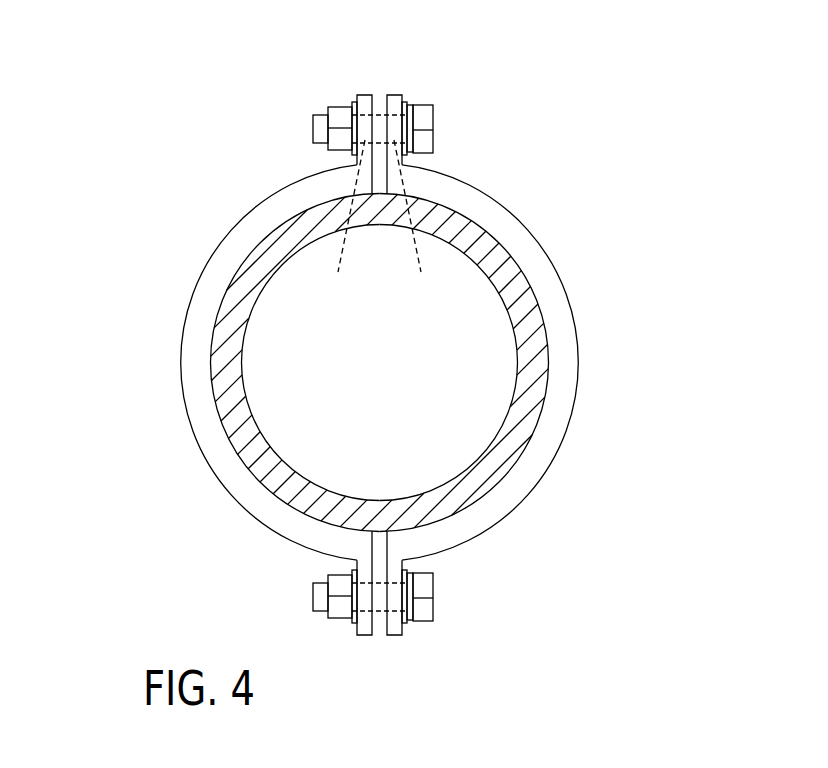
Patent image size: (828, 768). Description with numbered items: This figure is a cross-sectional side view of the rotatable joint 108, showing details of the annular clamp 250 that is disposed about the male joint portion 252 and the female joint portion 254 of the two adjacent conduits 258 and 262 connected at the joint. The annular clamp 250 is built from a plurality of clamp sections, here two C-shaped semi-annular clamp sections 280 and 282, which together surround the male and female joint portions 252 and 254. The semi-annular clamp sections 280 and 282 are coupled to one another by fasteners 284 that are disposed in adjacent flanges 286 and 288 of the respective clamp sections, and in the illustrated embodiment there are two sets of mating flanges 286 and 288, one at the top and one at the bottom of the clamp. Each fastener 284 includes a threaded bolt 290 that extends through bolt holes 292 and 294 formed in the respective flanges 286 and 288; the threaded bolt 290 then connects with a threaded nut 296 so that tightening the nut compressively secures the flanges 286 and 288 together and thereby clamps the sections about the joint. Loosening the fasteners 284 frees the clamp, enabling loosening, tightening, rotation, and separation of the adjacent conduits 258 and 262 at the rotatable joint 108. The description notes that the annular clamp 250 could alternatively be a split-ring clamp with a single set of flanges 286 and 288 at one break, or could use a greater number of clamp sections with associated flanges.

The rotatable joint 108 is at (393, 348).
The annular clamp 250 is at (396, 362).
The male joint portion 252 is at (238, 363).
The female joint portion 254 is at (273, 240).
The conduit 258 is at (344, 363).
The conduit 262 is at (245, 425).
The semi-annular clamp section 280 is at (205, 446).
The semi-annular clamp section 282 is at (542, 452).
The fastener 284 is at (394, 370).
The flange 286 is at (362, 100).
The flange 288 is at (397, 100).
The threaded bolt 290 is at (425, 142).
The bolt hole 292 is at (340, 222).
The bolt hole 294 is at (417, 222).
The threaded nut 296 is at (333, 115).